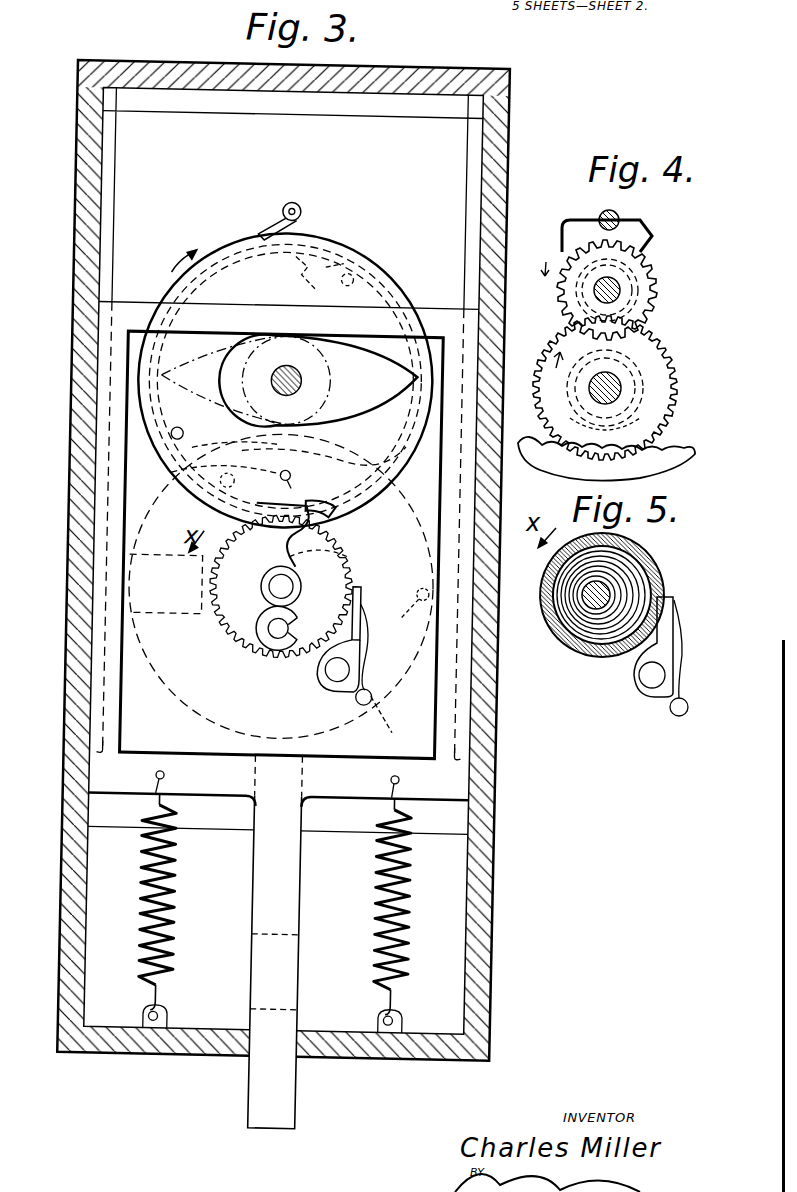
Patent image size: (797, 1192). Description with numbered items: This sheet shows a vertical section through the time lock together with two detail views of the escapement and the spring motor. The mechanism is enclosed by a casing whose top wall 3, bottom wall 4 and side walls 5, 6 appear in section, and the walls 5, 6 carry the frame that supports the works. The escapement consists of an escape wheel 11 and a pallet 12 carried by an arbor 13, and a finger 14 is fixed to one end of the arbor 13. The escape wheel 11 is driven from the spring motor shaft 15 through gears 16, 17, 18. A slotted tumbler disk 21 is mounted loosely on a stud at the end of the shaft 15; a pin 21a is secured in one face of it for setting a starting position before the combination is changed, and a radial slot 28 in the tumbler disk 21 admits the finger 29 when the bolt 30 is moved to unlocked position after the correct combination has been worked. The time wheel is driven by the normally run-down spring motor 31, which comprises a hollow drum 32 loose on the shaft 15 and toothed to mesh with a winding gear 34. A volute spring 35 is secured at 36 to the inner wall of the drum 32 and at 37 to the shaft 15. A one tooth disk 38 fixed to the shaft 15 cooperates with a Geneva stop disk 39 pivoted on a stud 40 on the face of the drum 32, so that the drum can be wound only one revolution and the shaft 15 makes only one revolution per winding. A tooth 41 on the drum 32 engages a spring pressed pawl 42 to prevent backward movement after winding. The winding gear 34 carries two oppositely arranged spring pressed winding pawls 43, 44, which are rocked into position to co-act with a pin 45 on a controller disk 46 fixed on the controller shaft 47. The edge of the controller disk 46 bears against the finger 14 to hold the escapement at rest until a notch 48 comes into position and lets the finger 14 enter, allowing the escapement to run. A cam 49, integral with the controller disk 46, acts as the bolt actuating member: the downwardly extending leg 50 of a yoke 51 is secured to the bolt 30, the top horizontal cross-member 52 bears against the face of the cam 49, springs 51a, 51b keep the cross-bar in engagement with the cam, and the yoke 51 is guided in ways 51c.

In FIG. 3, the top wall 3 is at (178, 63).
In FIG. 3, the bottom wall 4 is at (148, 1052).
In FIG. 3, the side wall 5 is at (80, 168).
In FIG. 3, the side wall 6 is at (507, 168).
In FIG. 4, the escape wheel 11 is at (650, 280).
In FIG. 4, the pallet 12 is at (642, 240).
In FIG. 4, the arbor 13 is at (594, 215).
In FIG. 3, the finger 14 is at (256, 210).
In FIG. 3, the spring motor shaft 15 is at (344, 546).
In FIG. 5, the spring motor shaft 15 is at (584, 588).
In FIG. 4, the gear 16 is at (606, 459).
In FIG. 4, the gear 17 is at (642, 362).
In FIG. 4, the gear 18 is at (550, 342).
In FIG. 3, the tumbler disk 21 is at (391, 724).
In FIG. 3, the pin 21a is at (401, 603).
In FIG. 3, the radial slot 28 is at (165, 584).
In FIG. 3, the finger 29 is at (264, 734).
In FIG. 3, the bolt 30 is at (300, 1094).
In FIG. 5, the spring motor 31 is at (560, 673).
In FIG. 3, the drum 32 is at (362, 560).
In FIG. 5, the drum 32 is at (552, 627).
In FIG. 3, the winding gear 34 is at (393, 456).
In FIG. 5, the volute spring 35 is at (634, 570).
In FIG. 5, the spring attachment point 36 is at (604, 544).
In FIG. 5, the spring attachment point 37 is at (598, 618).
In FIG. 3, the one tooth disk 38 is at (276, 562).
In FIG. 3, the Geneva stop disk 39 is at (272, 614).
In FIG. 3, the stud 40 is at (300, 620).
In FIG. 3, the tooth 41 is at (356, 613).
In FIG. 5, the tooth 41 is at (668, 602).
In FIG. 3, the spring pressed pawl 42 is at (372, 640).
In FIG. 5, the spring pressed pawl 42 is at (643, 655).
In FIG. 3, the winding pawl 43 is at (288, 470).
In FIG. 3, the winding pawl 44 is at (340, 248).
In FIG. 3, the pin 45 is at (300, 472).
In FIG. 3, the controller disk 46 is at (395, 282).
In FIG. 3, the controller shaft 47 is at (278, 376).
In FIG. 3, the notch 48 is at (348, 512).
In FIG. 3, the cam 49 is at (289, 380).
In FIG. 3, the leg 50 is at (264, 876).
In FIG. 3, the yoke 51 is at (104, 744).
In FIG. 3, the spring 51a is at (192, 956).
In FIG. 3, the spring 51b is at (382, 950).
In FIG. 3, the ways 51c is at (104, 716).
In FIG. 3, the cross-member 52 is at (287, 421).